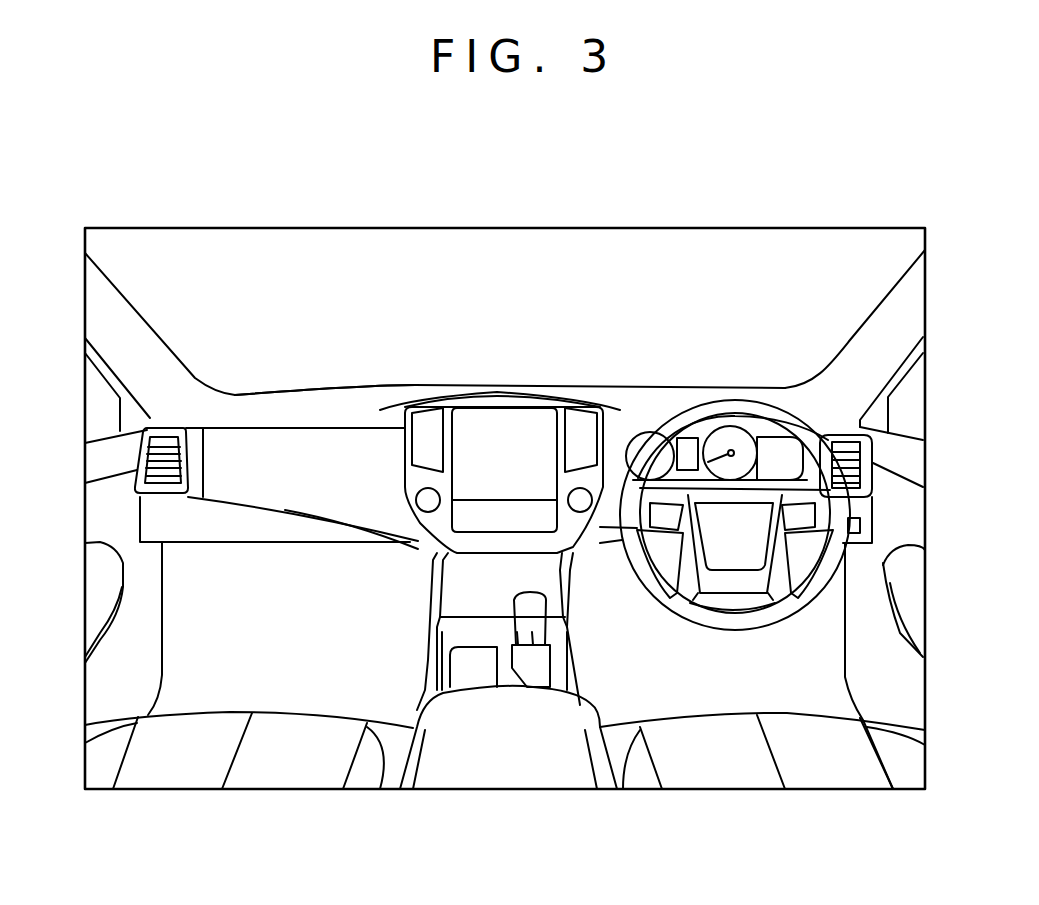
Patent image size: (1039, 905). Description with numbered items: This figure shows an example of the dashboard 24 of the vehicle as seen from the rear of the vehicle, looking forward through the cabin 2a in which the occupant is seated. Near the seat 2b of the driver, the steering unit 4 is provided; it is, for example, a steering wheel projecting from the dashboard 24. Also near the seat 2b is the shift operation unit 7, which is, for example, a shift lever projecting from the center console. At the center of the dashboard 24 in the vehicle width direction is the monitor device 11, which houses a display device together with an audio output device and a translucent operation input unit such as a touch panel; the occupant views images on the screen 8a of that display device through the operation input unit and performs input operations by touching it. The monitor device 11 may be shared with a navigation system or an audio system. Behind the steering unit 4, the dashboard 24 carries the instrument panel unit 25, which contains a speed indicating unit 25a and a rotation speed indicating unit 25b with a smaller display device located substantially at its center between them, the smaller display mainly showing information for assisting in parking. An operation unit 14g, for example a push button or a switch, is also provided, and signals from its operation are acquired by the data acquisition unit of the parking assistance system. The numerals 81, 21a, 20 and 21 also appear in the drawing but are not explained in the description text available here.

The cabin 2a is at (298, 252).
The dashboard 24 is at (393, 393).
The monitor device 11 is at (493, 390).
The screen 8a is at (531, 428).
The display screen 81 is at (545, 310).
The indicator display 21a is at (683, 437).
The steering wheel 20 is at (735, 375).
The meter cluster 21 is at (730, 440).
The rotation speed indicating unit 25b is at (789, 300).
The speed indicating unit 25a is at (633, 463).
The instrument panel unit 25 is at (705, 423).
The steering unit 4 is at (762, 407).
The operation unit 14g is at (860, 525).
The shift operation unit 7 is at (531, 632).
The seat 2b is at (718, 773).